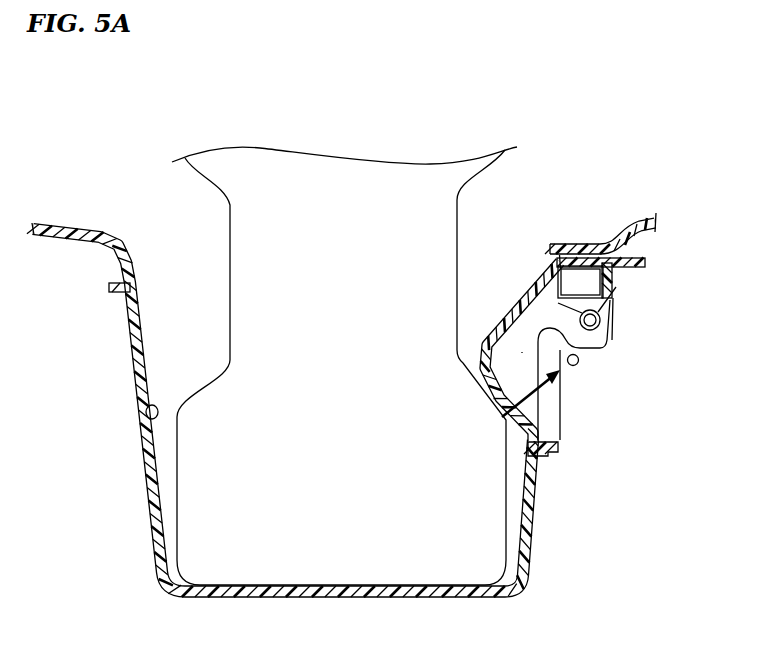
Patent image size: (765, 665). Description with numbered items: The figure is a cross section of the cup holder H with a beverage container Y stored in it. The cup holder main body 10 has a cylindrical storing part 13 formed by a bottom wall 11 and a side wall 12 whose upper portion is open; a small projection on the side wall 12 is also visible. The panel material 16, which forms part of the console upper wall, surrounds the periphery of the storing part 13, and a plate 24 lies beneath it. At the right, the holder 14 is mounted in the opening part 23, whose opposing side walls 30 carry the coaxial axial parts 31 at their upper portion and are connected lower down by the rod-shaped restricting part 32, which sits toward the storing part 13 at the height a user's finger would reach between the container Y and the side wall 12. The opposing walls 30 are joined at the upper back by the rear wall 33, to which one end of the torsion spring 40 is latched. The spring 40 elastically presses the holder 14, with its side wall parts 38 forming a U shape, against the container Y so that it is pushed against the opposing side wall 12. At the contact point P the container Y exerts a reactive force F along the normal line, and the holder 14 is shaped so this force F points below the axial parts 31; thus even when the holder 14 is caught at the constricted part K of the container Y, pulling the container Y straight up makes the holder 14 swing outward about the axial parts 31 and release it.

The cup holder main body 10 is at (145, 516).
The bottom wall 11 is at (315, 585).
The side wall 12 is at (147, 418).
The storing part 13 is at (198, 350).
The holder 14 is at (516, 292).
The panel material 16 is at (596, 243).
The opening part 23 is at (556, 441).
The plate portion 24 is at (646, 246).
The side wall of the opening part 30 is at (561, 400).
The axial part 31 is at (600, 320).
The restricting part 32 is at (579, 360).
The rear wall 33 is at (617, 277).
The side wall part 38 is at (522, 352).
The torsion spring 40 is at (570, 295).
The cup holder H is at (482, 127).
The beverage container Y is at (278, 190).
The constricted part K is at (467, 357).
The reactive force F is at (530, 400).
The contact point P is at (502, 417).